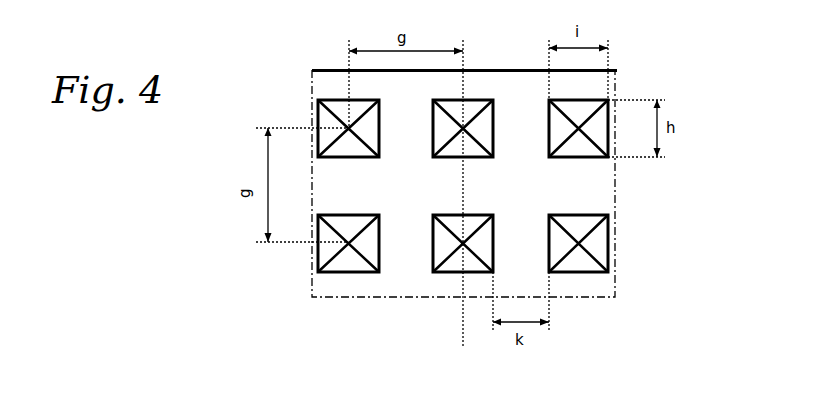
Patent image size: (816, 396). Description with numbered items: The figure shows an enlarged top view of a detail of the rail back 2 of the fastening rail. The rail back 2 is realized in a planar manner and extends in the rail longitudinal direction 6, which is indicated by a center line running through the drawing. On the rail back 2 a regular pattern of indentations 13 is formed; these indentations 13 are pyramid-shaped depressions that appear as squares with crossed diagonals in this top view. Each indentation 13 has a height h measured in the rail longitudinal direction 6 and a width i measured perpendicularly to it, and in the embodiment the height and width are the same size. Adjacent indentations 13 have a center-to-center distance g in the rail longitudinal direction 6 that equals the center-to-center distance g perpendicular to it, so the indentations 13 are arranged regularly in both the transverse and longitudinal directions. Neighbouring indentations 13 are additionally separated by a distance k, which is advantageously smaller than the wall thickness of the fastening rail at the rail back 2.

The rail back 2 is at (598, 193).
The indentations 13 is at (440, 272).
The rail longitudinal direction 6 is at (463, 323).